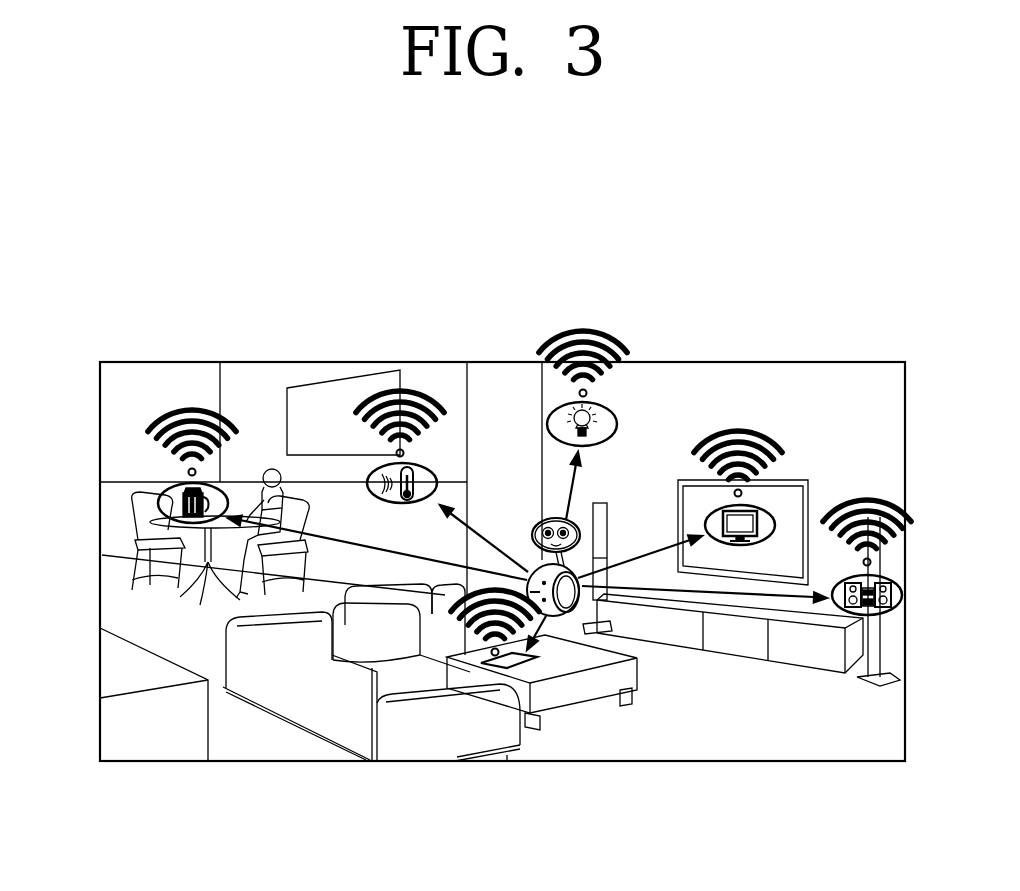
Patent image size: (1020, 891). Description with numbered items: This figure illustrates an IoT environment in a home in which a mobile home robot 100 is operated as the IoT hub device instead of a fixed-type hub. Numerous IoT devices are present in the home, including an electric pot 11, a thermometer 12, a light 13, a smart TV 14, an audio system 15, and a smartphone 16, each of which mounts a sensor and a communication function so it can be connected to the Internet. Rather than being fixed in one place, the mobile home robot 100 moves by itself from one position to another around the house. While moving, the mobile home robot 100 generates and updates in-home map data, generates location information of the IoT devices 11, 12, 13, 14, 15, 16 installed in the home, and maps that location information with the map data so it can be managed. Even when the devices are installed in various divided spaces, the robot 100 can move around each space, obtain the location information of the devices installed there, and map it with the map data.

The mobile home robot 100 is at (527, 572).
The electric pot 11 is at (182, 494).
The thermometer 12 is at (374, 477).
The light 13 is at (612, 413).
The smart TV 14 is at (775, 515).
The audio system 15 is at (901, 591).
The smartphone 16 is at (512, 661).